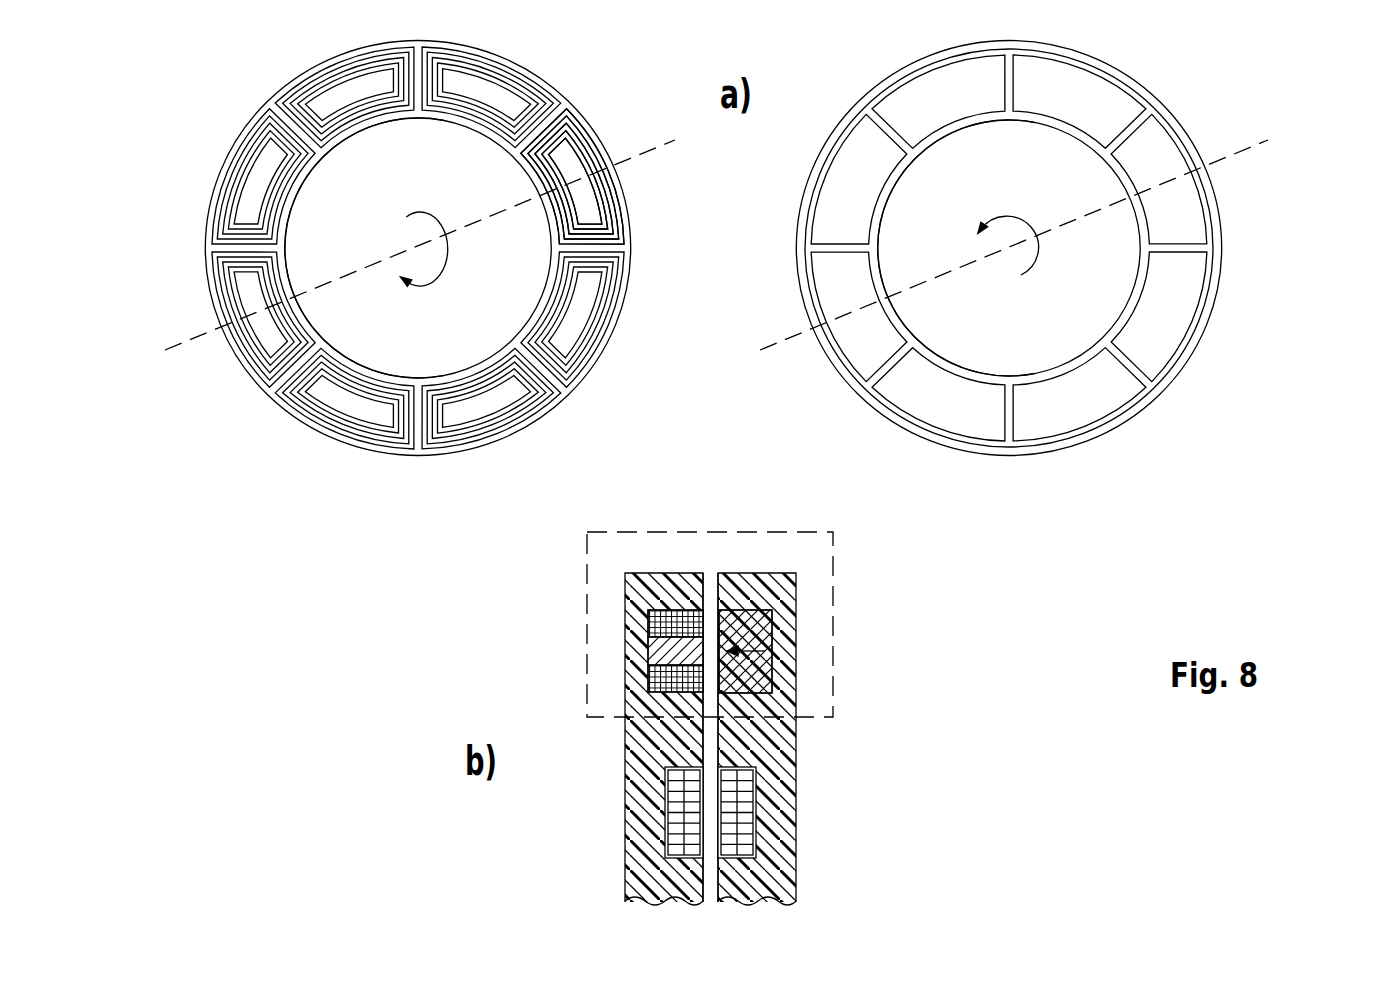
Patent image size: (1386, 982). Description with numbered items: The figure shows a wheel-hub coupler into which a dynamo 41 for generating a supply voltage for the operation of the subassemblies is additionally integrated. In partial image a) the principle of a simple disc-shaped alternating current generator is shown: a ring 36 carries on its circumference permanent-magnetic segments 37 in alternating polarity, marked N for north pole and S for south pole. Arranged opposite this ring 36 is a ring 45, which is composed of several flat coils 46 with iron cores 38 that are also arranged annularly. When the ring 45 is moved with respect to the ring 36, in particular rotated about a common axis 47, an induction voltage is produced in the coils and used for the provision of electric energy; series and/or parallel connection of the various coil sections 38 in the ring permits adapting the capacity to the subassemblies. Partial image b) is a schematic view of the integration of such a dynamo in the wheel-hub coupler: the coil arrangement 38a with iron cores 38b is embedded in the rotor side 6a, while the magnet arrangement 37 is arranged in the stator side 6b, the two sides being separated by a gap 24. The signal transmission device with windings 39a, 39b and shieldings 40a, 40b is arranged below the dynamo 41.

The dynamo 41 is at (210, 142).
The iron cores 38 is at (497, 108).
The ring 45 is at (585, 127).
The flat coils 46 is at (592, 203).
The common axis 47 is at (208, 338).
The ring 36 is at (1182, 123).
The permanent-magnetic segments 37 is at (1195, 227).
The rotor side 6a is at (642, 593).
The stator side 6b is at (783, 597).
The gap 24 is at (710, 580).
The coil arrangement 38a is at (660, 623).
The iron cores 38b is at (657, 653).
The winding 39a is at (677, 833).
The winding 39b is at (742, 833).
The shielding 40a is at (657, 788).
The shielding 40b is at (753, 790).